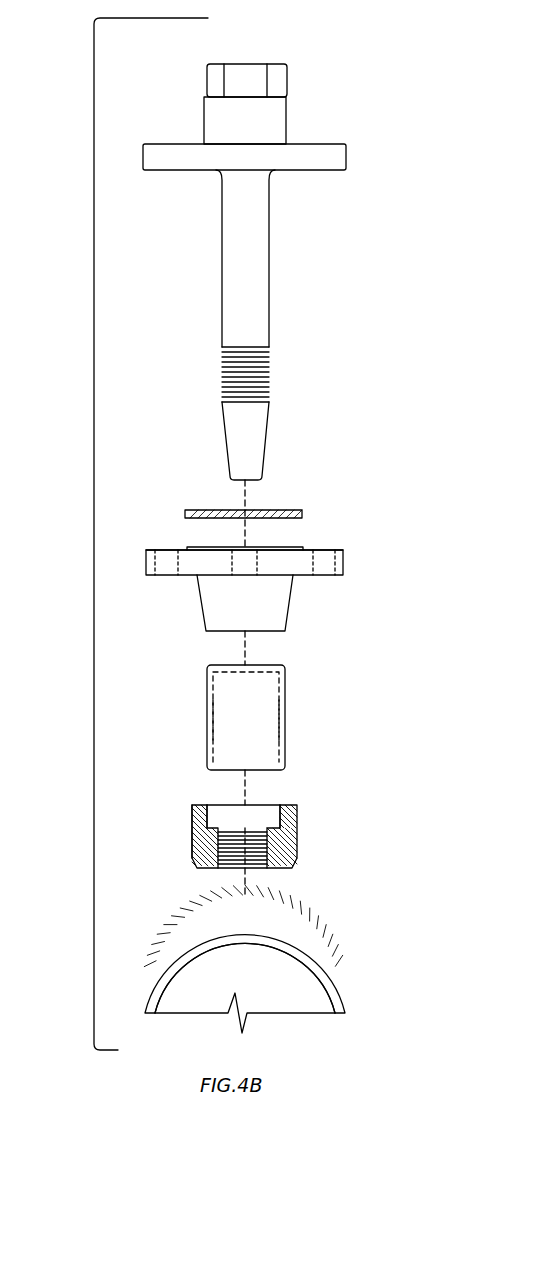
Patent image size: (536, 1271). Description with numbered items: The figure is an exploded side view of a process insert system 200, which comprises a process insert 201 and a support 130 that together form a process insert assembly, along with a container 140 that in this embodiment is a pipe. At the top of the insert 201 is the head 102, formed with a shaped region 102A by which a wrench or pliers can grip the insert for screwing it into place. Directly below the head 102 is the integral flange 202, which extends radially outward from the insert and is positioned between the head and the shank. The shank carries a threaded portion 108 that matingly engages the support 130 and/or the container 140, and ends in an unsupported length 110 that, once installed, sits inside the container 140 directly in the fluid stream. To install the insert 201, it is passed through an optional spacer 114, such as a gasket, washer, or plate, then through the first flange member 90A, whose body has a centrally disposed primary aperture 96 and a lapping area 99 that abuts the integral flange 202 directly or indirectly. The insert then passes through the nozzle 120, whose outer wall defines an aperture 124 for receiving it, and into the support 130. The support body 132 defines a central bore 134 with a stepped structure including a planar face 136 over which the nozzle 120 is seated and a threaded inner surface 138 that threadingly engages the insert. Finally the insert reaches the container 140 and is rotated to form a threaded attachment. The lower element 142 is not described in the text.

The process insert system 200 is at (92, 230).
The shaped region 102A is at (274, 80).
The head 102 is at (264, 115).
The integral flange 202 is at (330, 160).
The process insert 201 is at (302, 202).
The threaded portion 108 is at (271, 364).
The unsupported length 110 is at (252, 441).
The spacer 114 is at (265, 511).
The primary aperture 96 is at (288, 546).
The lapping area 99 is at (190, 548).
The first flange member 90A is at (304, 598).
The nozzle 120 is at (302, 692).
The aperture 124 is at (248, 727).
The support 130 is at (190, 816).
The planar face 136 is at (218, 806).
The central bore 134 is at (255, 826).
The body 132 is at (207, 842).
The inner surface 138 is at (255, 858).
The container 140 is at (334, 934).
The dome inner surface 142 is at (240, 888).